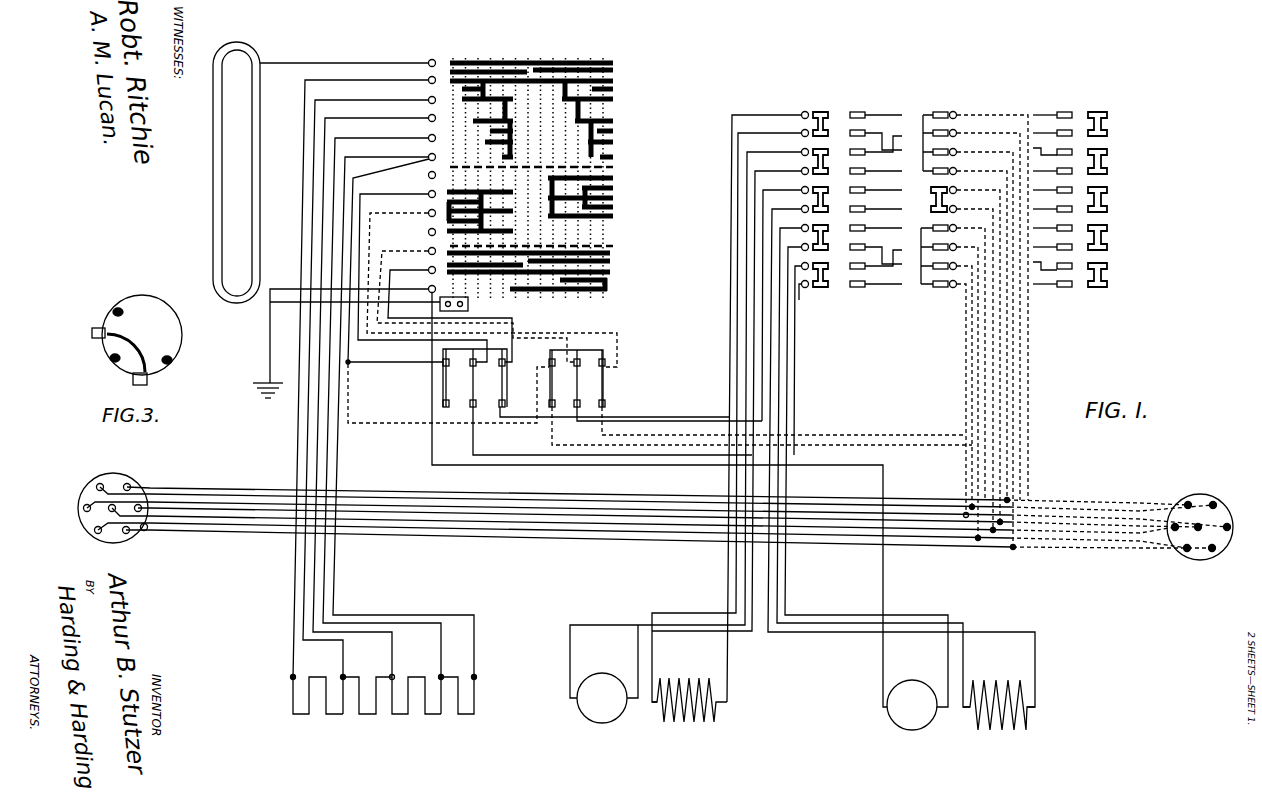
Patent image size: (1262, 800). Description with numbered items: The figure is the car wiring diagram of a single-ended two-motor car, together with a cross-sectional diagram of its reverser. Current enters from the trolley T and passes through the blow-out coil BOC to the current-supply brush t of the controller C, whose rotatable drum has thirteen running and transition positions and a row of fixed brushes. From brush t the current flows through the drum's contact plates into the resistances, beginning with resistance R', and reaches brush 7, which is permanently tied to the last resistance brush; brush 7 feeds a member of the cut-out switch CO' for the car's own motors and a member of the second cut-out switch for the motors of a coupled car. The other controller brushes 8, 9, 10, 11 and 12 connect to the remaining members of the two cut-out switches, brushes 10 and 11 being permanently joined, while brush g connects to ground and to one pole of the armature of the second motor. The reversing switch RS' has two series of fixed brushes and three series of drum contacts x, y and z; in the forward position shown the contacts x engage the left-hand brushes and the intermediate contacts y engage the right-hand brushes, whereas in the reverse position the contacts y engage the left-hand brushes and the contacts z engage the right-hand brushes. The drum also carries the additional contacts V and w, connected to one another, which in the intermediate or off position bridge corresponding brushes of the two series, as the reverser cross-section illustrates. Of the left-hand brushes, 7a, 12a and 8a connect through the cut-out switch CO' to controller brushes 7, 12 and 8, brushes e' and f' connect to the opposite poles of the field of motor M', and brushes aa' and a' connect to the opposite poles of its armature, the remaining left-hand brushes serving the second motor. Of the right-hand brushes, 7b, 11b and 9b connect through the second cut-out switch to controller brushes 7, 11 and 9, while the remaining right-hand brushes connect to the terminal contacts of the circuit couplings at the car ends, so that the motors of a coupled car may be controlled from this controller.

In FIG. 1, the blow-out coil BOC is at (218, 172).
In FIG. 1, the current supply brush t is at (348, 55).
In FIG. 1, the controller brush 7 is at (364, 371).
In FIG. 1, the controller brush 8 is at (422, 271).
In FIG. 1, the controller brush 9 is at (492, 283).
In FIG. 1, the controller brush 10 is at (425, 227).
In FIG. 1, the controller brush 11 is at (475, 299).
In FIG. 1, the controller brush 12 is at (450, 309).
In FIG. 1, the ground brush g is at (570, 494).
In FIG. 1, the trolley T is at (459, 305).
In FIG. 1, the controller C is at (530, 160).
In FIG. 1, the cut-out switch CO' is at (577, 402).
In FIG. 1, the reversing switch RS' is at (838, 387).
In FIG. 1, the reverser drum contacts x is at (802, 398).
In FIG. 3, the reverser drum contacts x is at (112, 304).
In FIG. 1, the reverser bridging contacts V is at (876, 188).
In FIG. 3, the reverser bridging contacts V is at (105, 327).
In FIG. 1, the intermediate reverser drum contacts y is at (974, 318).
In FIG. 3, the intermediate reverser drum contacts y is at (108, 362).
In FIG. 1, the reverser bridging contacts w is at (1055, 188).
In FIG. 3, the reverser bridging contacts w is at (132, 359).
In FIG. 1, the reverser drum contacts z is at (1097, 188).
In FIG. 3, the reverser drum contacts z is at (171, 363).
In FIG. 1, the reverser brush 7a is at (768, 401).
In FIG. 1, the reverser brush e' is at (730, 411).
In FIG. 1, the reverser brush f' is at (689, 418).
In FIG. 1, the reverser brush aa' is at (730, 394).
In FIG. 1, the reverser brush a' is at (785, 299).
In FIG. 1, the reverser brush 12a is at (901, 451).
In FIG. 1, the reverser brush 8a is at (873, 461).
In FIG. 1, the reverser brush 7b is at (989, 300).
In FIG. 1, the reverser brush 11b is at (972, 363).
In FIG. 1, the reverser brush 9b is at (968, 357).
In FIG. 1, the resistance R' is at (309, 688).
In FIG. 1, the motor M' is at (652, 711).